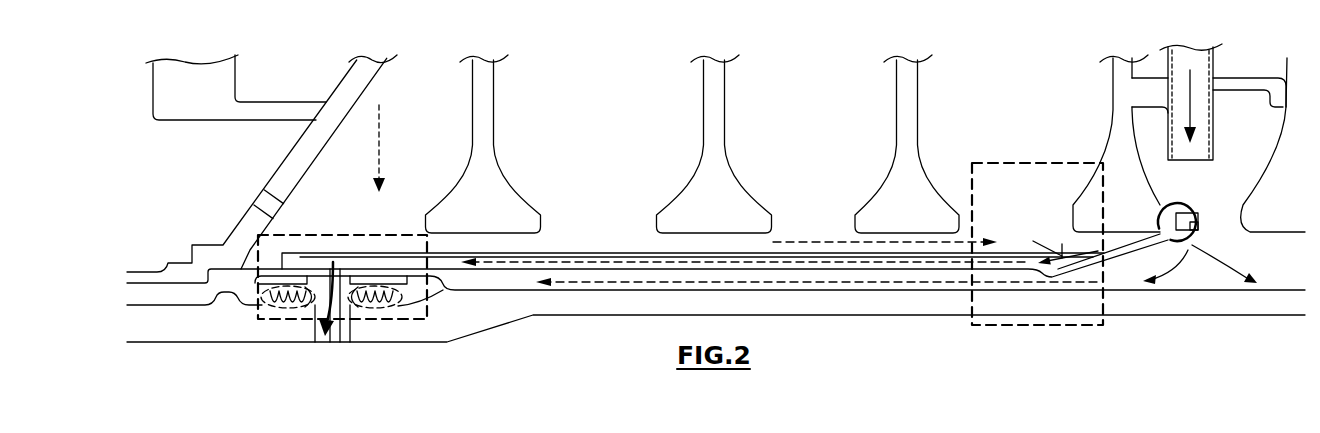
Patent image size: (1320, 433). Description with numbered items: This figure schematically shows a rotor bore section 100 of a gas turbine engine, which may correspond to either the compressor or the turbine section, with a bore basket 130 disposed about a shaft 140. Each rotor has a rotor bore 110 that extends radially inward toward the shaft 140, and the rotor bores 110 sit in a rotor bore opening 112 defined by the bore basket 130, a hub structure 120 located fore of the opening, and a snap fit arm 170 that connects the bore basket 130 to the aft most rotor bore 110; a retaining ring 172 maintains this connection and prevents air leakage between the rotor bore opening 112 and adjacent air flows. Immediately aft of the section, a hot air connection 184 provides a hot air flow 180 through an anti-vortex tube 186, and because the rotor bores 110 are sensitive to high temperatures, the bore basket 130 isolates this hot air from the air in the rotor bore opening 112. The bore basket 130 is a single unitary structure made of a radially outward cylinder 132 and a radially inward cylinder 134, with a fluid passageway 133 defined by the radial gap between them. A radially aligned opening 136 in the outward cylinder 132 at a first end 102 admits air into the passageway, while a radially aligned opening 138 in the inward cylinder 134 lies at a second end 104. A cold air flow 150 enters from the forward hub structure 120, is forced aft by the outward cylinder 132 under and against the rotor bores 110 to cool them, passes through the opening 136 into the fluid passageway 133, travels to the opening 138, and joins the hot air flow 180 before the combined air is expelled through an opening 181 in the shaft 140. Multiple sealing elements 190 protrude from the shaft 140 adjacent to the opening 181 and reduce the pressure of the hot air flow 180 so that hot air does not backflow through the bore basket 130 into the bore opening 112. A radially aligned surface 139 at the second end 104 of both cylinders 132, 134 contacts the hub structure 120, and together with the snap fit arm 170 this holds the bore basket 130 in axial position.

The rotor bore section 100 is at (974, 70).
The first end 102 is at (1029, 162).
The second end 104 is at (352, 234).
The rotor bore 110 is at (480, 137).
The rotor bore opening 112 is at (837, 96).
The hub structure 120 is at (367, 86).
The bore basket 130 is at (605, 252).
The radially outward cylinder 132 is at (373, 268).
The fluid passageway 133 is at (623, 262).
The radially inward cylinder 134 is at (470, 277).
The radially aligned opening 136 is at (1062, 247).
The radially aligned opening 138 is at (340, 300).
The radially aligned surface 139 is at (1163, 220).
The shaft 140 is at (514, 316).
The cold air flow 150 is at (382, 147).
The snap fit arm 170 is at (1180, 200).
The retaining ring 172 is at (1200, 227).
The hot air flow 180 is at (1195, 115).
The opening 181 is at (330, 335).
The hot air connection 184 is at (1215, 58).
The anti-vortex tube 186 is at (1178, 62).
The sealing elements 190 is at (285, 312).